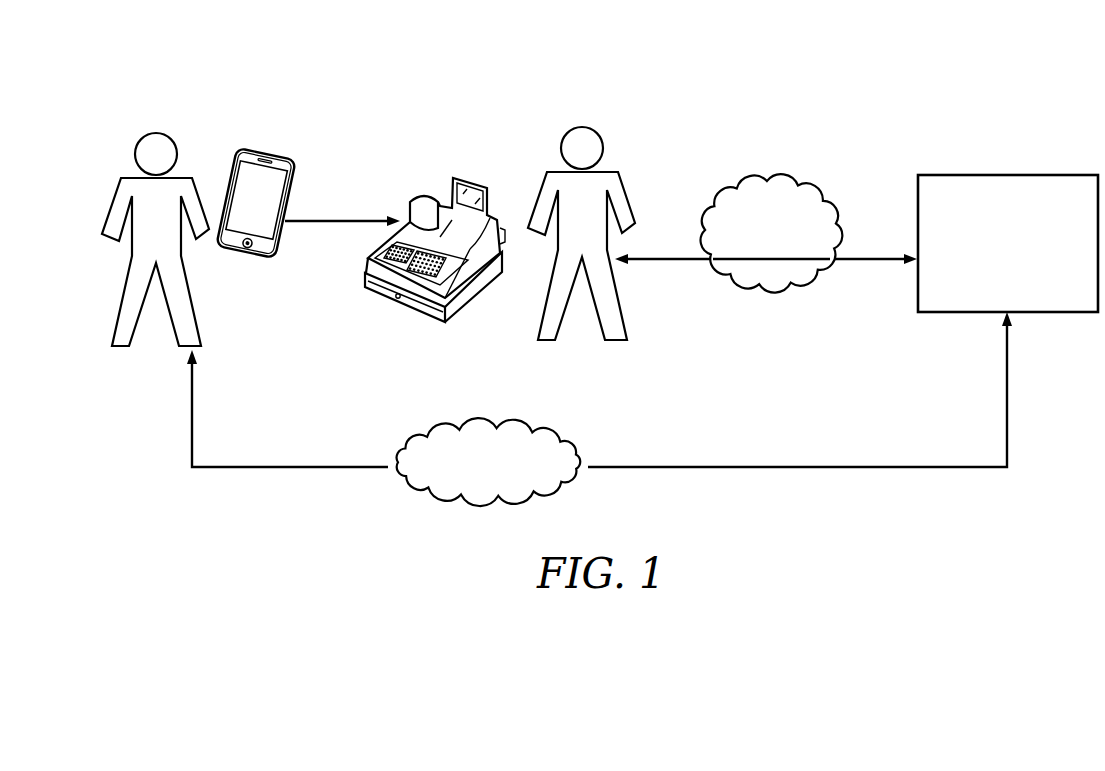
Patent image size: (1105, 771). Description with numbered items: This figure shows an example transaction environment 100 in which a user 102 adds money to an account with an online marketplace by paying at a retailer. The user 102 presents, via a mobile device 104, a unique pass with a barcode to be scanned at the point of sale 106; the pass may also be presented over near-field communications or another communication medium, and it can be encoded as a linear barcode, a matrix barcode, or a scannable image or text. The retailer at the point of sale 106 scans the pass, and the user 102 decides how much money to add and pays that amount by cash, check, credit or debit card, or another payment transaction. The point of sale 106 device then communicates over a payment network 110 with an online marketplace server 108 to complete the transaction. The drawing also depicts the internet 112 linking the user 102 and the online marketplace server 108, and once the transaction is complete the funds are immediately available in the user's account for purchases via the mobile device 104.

The transaction environment 100 is at (642, 98).
The user 102 is at (158, 132).
The mobile device 104 is at (265, 149).
The point of sale 106 is at (433, 192).
The online marketplace server 108 is at (1005, 173).
The payment network 110 is at (765, 297).
The internet 112 is at (492, 416).